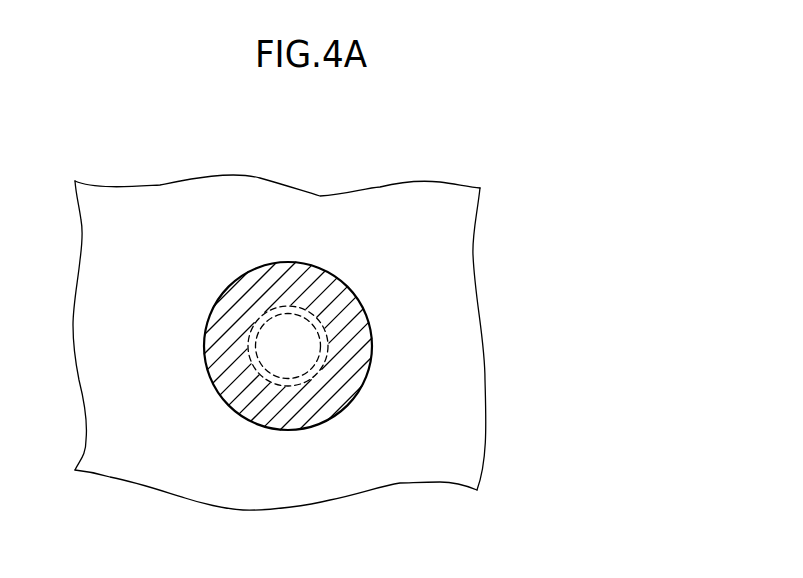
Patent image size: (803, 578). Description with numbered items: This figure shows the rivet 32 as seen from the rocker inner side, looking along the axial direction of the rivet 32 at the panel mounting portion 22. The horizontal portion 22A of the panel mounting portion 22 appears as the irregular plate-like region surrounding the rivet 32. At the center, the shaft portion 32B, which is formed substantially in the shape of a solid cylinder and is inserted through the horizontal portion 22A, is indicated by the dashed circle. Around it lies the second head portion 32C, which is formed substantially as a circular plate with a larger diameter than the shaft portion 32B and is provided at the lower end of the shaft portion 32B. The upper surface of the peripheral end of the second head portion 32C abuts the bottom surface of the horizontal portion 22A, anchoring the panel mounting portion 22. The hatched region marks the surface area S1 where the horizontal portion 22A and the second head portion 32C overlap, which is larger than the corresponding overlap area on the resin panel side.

The horizontal portion 22A is at (475, 277).
The panel mounting portion 22 is at (381, 342).
The rivet 32 is at (383, 325).
The shaft portion 32B is at (350, 400).
The second head portion 32C is at (372, 350).
The surface area S1 is at (290, 277).